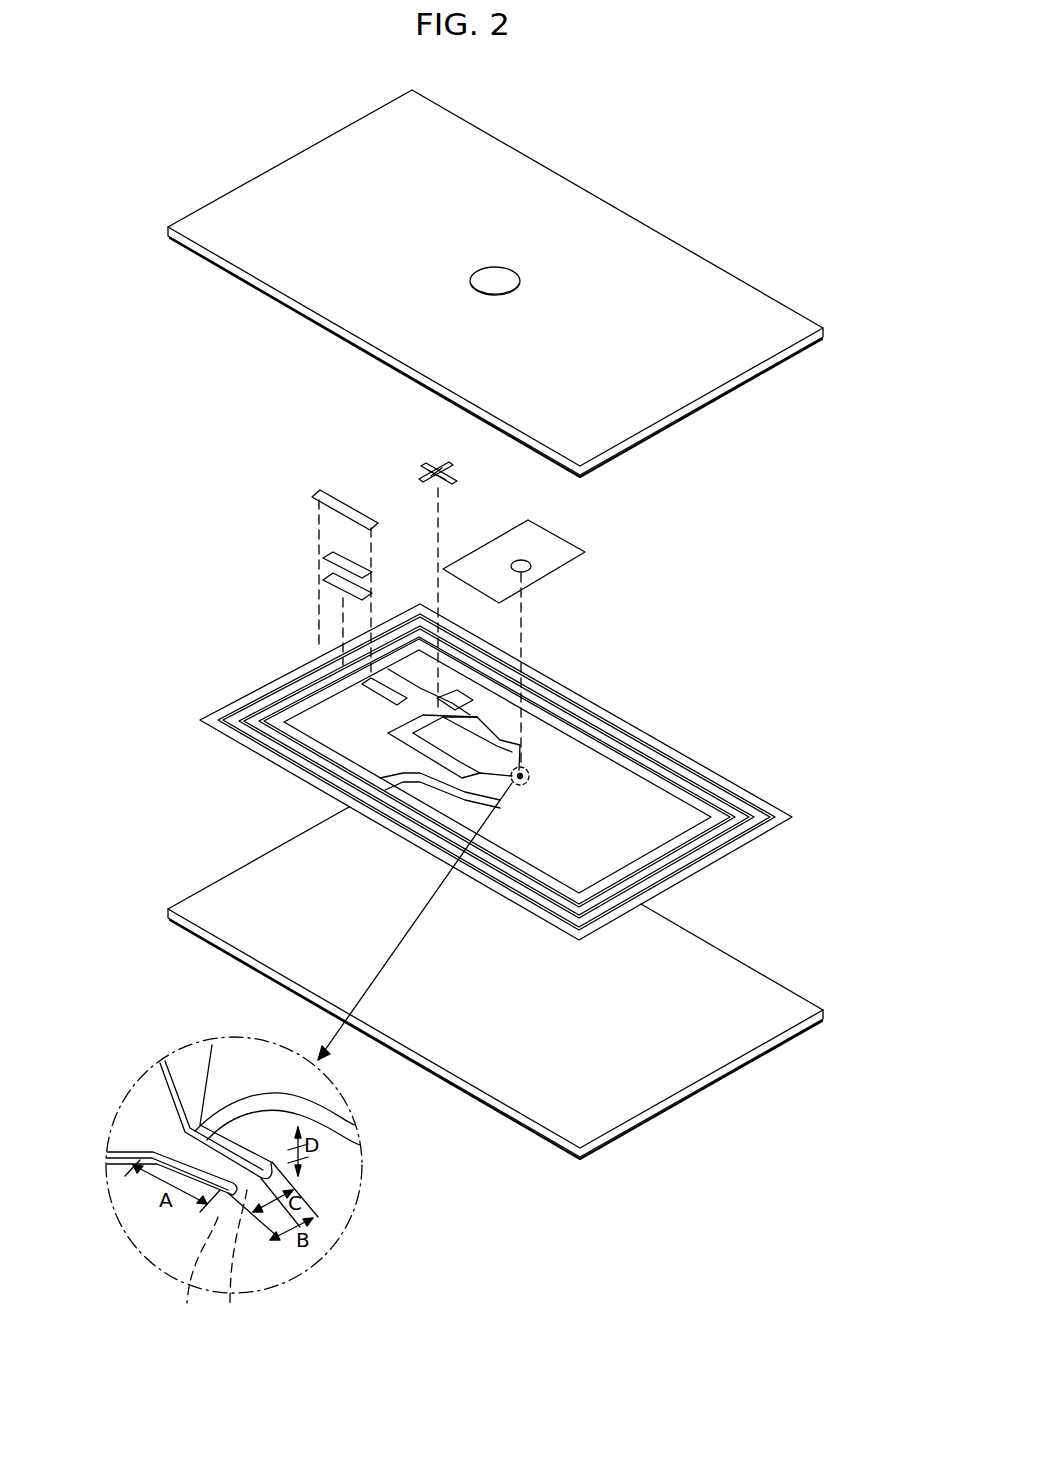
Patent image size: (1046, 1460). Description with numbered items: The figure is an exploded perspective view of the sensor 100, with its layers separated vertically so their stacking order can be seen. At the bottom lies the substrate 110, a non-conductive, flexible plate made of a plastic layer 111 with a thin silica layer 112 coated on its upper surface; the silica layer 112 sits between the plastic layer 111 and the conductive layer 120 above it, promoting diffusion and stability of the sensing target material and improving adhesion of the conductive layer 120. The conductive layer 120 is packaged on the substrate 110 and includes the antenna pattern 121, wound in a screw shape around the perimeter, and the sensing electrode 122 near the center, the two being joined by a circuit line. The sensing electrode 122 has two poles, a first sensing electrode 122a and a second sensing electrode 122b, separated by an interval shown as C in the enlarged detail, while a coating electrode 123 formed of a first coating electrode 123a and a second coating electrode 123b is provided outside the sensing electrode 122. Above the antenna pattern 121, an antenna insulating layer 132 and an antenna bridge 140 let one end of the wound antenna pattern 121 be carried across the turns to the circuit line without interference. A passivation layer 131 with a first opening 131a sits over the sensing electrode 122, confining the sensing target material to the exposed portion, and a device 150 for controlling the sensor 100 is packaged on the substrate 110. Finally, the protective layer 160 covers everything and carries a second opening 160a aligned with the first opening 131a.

The sensor 100 is at (168, 143).
The substrate 110 is at (495, 1034).
The plastic layer 111 is at (623, 1220).
The silica layer 112 is at (602, 1130).
The conductive layer 120 is at (496, 771).
The antenna pattern 121 is at (642, 737).
The sensing electrode 122 is at (522, 775).
The first sensing electrode 122a is at (172, 1243).
The second sensing electrode 122b is at (157, 1340).
The coating electrode 123 is at (454, 730).
The first coating electrode 123a is at (360, 1145).
The second coating electrode 123b is at (355, 1125).
The passivation layer 131 is at (536, 631).
The first opening 131a is at (528, 565).
The antenna insulating layer 132 is at (323, 580).
The antenna bridge 140 is at (313, 495).
The device 150 is at (426, 472).
The protective layer 160 is at (495, 283).
The second opening 160a is at (517, 282).